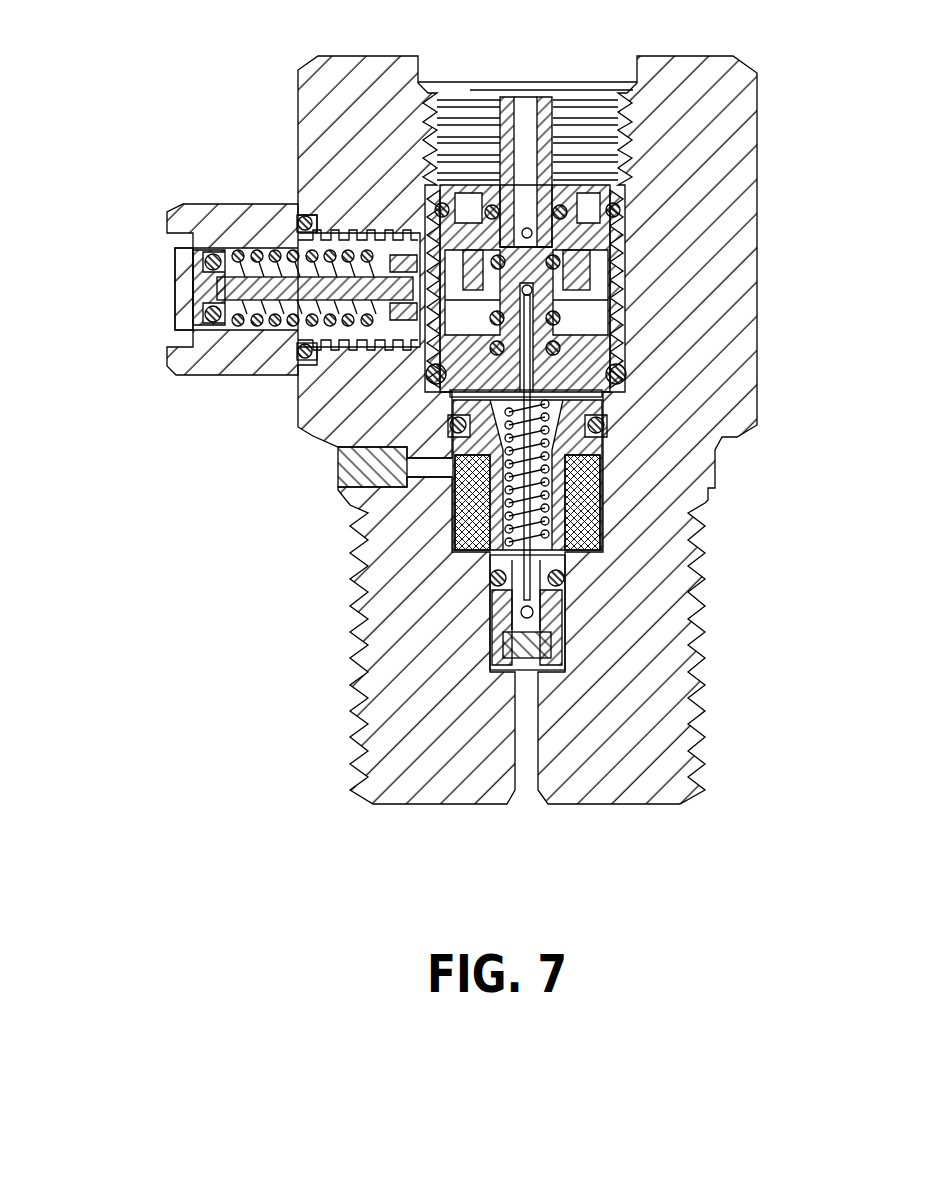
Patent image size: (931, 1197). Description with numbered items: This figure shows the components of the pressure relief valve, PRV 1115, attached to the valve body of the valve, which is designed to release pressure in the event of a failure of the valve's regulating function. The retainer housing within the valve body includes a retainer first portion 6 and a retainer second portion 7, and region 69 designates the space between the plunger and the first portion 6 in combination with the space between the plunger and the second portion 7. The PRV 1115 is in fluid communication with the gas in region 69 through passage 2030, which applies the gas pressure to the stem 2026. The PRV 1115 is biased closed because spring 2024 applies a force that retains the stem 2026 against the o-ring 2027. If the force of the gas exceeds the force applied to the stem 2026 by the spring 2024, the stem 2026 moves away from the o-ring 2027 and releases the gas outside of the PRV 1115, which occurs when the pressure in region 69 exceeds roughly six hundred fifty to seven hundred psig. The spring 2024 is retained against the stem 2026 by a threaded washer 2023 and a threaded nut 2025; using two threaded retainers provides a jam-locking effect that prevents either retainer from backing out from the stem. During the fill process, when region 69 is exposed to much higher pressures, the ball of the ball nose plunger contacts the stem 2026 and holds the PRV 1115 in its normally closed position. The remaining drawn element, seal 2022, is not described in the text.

The retainer first portion 6 is at (595, 260).
The retainer second portion 7 is at (598, 332).
The region 69 is at (430, 222).
The pressure relief valve (PRV) 1115 is at (173, 212).
The upper seal 2022 is at (300, 218).
The threaded washer 2023 is at (330, 340).
The spring 2024 is at (257, 328).
The threaded nut 2025 is at (357, 323).
The stem 2026 is at (192, 287).
The o-ring 2027 is at (203, 317).
The passage 2030 is at (420, 237).